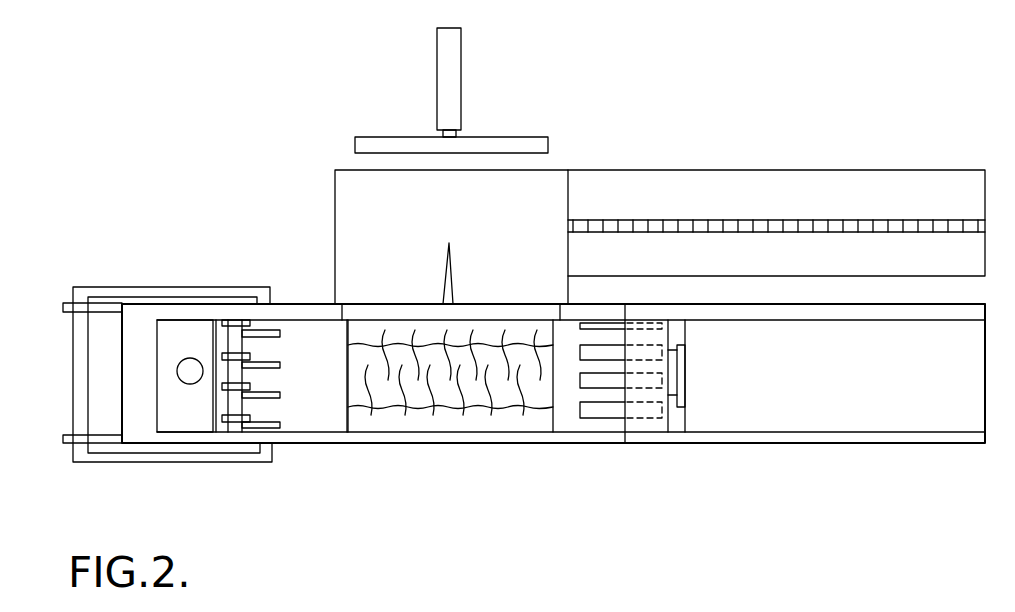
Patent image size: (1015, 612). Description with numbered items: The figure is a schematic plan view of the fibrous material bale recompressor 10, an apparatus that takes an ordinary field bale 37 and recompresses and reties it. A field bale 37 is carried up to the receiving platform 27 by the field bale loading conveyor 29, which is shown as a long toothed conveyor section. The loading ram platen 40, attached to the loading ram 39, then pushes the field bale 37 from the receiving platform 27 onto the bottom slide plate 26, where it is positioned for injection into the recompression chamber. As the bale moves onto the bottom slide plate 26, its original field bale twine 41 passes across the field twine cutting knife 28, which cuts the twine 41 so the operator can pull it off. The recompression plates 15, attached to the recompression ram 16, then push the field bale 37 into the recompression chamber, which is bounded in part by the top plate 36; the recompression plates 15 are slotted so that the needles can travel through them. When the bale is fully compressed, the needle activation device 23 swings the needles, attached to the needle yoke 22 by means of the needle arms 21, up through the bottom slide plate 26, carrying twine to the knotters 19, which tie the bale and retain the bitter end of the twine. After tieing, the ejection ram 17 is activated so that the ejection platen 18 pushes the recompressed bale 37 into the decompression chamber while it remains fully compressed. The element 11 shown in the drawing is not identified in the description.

The fibrous material bale recompressor 10 is at (322, 389).
The connector 11 is at (700, 440).
The recompression plates 15 is at (567, 410).
The recompression ram 16 is at (827, 388).
The ejection ram 17 is at (192, 360).
The ejection platen 18 is at (194, 428).
The knotter 19 is at (235, 402).
The needle arms 21 is at (142, 458).
The needle yoke 22 is at (262, 297).
The needle activation device 23 is at (85, 377).
The bottom slide plate 26 is at (535, 435).
The receiving platform 27 is at (466, 208).
The field twine cutting knife 28 is at (452, 290).
The field bale loading conveyor 29 is at (764, 208).
The top plate 36 is at (217, 428).
The field bale 37 is at (459, 410).
The loading ram 39 is at (448, 82).
The loading ram platen 40 is at (535, 148).
The field bale twine 41 is at (465, 347).